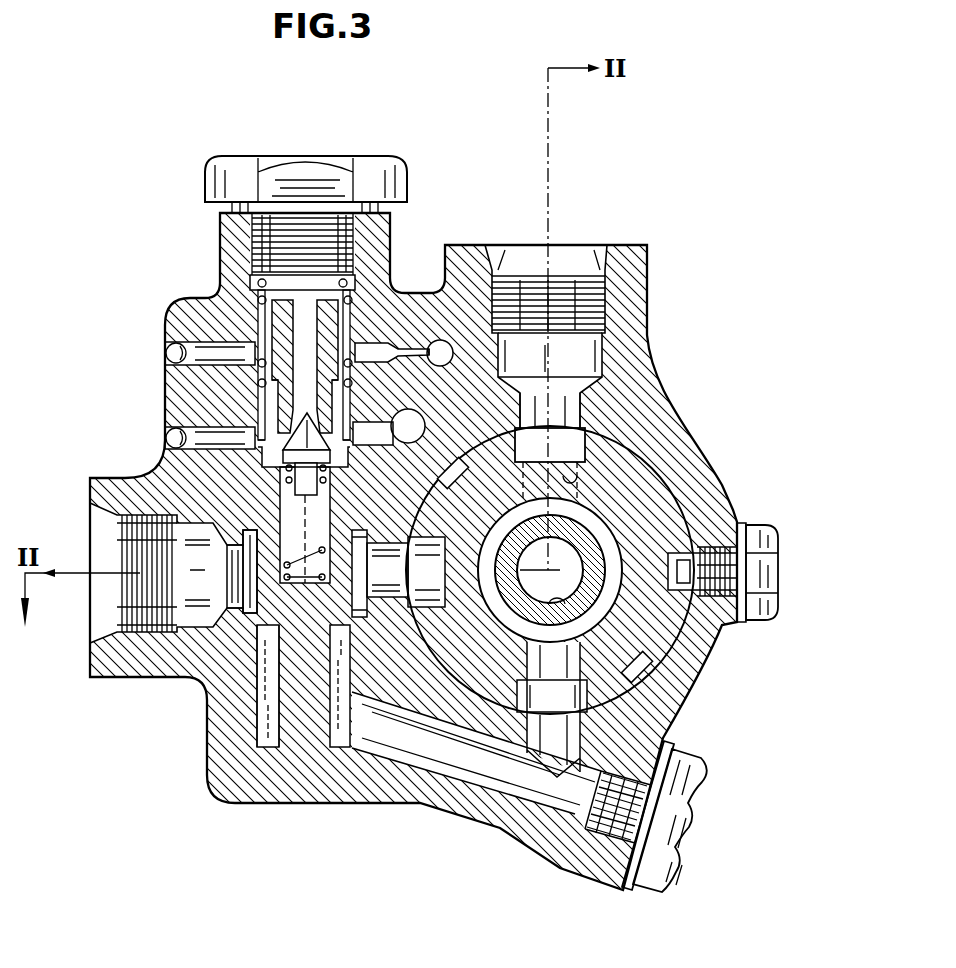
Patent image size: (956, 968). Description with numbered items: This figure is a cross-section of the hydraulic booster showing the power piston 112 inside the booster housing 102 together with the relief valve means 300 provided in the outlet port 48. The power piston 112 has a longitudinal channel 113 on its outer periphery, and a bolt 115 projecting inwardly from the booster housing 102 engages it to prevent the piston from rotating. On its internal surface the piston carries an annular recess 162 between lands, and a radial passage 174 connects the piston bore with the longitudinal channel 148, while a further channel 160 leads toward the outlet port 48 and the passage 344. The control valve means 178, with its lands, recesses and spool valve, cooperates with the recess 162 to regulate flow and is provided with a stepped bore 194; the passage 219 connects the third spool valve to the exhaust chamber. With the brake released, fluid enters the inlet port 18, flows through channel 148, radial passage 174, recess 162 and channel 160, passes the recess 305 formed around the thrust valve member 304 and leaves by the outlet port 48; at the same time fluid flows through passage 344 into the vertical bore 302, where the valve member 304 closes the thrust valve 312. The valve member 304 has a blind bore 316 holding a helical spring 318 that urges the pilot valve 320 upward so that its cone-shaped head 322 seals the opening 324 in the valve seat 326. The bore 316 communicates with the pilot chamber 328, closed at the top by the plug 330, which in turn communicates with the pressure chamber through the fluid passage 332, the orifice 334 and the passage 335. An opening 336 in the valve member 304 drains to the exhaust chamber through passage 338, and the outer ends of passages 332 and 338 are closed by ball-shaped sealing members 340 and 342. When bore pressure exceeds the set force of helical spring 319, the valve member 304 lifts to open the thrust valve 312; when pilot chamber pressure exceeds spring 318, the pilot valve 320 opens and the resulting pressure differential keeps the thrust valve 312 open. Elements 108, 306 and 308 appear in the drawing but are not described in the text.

The inlet port 18 is at (585, 250).
The outlet port 48 is at (96, 620).
The booster housing 102 is at (662, 328).
The housing bore 108 is at (605, 468).
The power piston 112 is at (665, 535).
The longitudinal channel 113 is at (690, 590).
The bolt 115 is at (756, 570).
The longitudinal channel 148 is at (578, 428).
The longitudinal channel 160 is at (435, 585).
The annular recess 162 is at (612, 588).
The radial passage 174 is at (578, 482).
The control valve means 178 is at (555, 592).
The stepped bore 194 is at (580, 642).
The passage 219 is at (550, 463).
The relief valve means 300 is at (160, 388).
The bore 302 is at (292, 270).
The valve member 304 is at (277, 680).
The recess 305 is at (266, 718).
The passage 306 is at (365, 550).
The orifice fitting 308 is at (246, 585).
The thrust valve 312 is at (264, 688).
The blind bore 316 is at (290, 500).
The helical spring 318 is at (300, 524).
The helical spring 319 is at (360, 284).
The pilot valve 320 is at (292, 462).
The cone-shaped head 322 is at (288, 410).
The opening 324 is at (297, 337).
The valve seat 326 is at (262, 322).
The pilot chamber 328 is at (345, 238).
The plug 330 is at (305, 165).
The fluid passage 332 is at (368, 352).
The orifice 334 is at (411, 350).
The passage 335 is at (457, 335).
The opening 336 is at (260, 455).
The passage 338 is at (386, 416).
The ball-shaped sealing member 340 is at (166, 352).
The ball-shaped sealing member 342 is at (166, 437).
The passage 344 is at (387, 583).